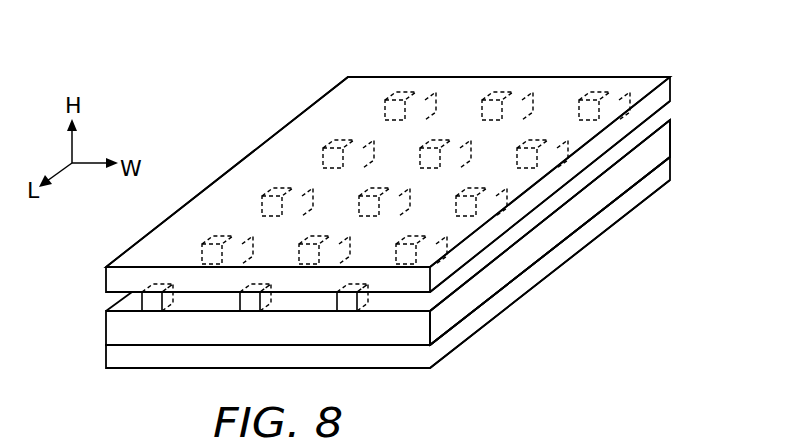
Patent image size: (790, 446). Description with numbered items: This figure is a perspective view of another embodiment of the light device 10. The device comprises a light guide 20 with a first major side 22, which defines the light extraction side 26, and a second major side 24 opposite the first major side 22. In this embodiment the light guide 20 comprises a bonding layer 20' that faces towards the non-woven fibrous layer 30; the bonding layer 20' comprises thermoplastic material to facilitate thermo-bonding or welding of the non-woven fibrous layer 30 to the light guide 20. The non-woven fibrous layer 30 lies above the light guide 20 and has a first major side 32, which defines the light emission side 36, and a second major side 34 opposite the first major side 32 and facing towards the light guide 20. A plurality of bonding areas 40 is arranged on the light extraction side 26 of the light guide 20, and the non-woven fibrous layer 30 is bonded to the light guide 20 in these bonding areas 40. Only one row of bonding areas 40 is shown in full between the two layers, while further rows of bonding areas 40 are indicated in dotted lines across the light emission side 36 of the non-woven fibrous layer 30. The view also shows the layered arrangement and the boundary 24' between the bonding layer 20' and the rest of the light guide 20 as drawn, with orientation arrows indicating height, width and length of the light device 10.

The light device 10 is at (225, 118).
The light guide 20 is at (361, 264).
The bonding layer 20' is at (360, 232).
The first major side 22 is at (407, 310).
The second major side 24 is at (388, 302).
The interface surface between substrate layers 24' is at (388, 284).
The light extraction side 26 is at (508, 238).
The non-woven fibrous layer 30 is at (105, 280).
The first major side 32 is at (629, 82).
The second major side 34 is at (668, 110).
The light emission side 36 is at (557, 88).
The bonding areas 40 is at (152, 300).